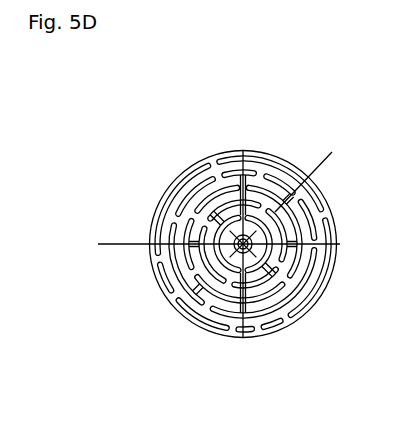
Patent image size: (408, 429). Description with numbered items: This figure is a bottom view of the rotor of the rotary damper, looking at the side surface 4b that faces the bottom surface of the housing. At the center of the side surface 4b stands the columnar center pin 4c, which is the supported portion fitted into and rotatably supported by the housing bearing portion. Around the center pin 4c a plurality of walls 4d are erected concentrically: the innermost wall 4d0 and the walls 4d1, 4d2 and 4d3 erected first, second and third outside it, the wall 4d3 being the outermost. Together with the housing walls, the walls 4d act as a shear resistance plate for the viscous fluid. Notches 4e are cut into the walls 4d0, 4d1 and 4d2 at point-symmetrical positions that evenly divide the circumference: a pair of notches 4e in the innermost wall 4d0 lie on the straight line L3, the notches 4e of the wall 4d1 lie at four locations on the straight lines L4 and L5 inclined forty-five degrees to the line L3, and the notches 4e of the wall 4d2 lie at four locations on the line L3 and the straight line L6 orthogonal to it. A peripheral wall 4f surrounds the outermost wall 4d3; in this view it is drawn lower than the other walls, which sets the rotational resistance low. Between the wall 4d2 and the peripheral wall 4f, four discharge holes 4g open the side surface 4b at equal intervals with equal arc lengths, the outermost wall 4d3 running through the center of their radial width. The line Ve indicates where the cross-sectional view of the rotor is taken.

The side surface 4b is at (236, 152).
The center pin 4c is at (258, 243).
The walls 4d is at (143, 74).
The innermost wall 4d0 is at (210, 160).
The wall erected first outside the innermost wall 4d1 is at (200, 168).
The wall erected second outside the innermost wall 4d2 is at (175, 185).
The outermost wall 4d3 is at (160, 198).
The notches 4e is at (255, 175).
The peripheral wall 4f is at (172, 243).
The discharge hole 4g is at (165, 230).
The straight line L3 is at (243, 345).
The straight line L4 is at (180, 312).
The straight line L5 is at (307, 313).
The straight line L6 is at (345, 244).
The line Ve- Ve is at (243, 147).